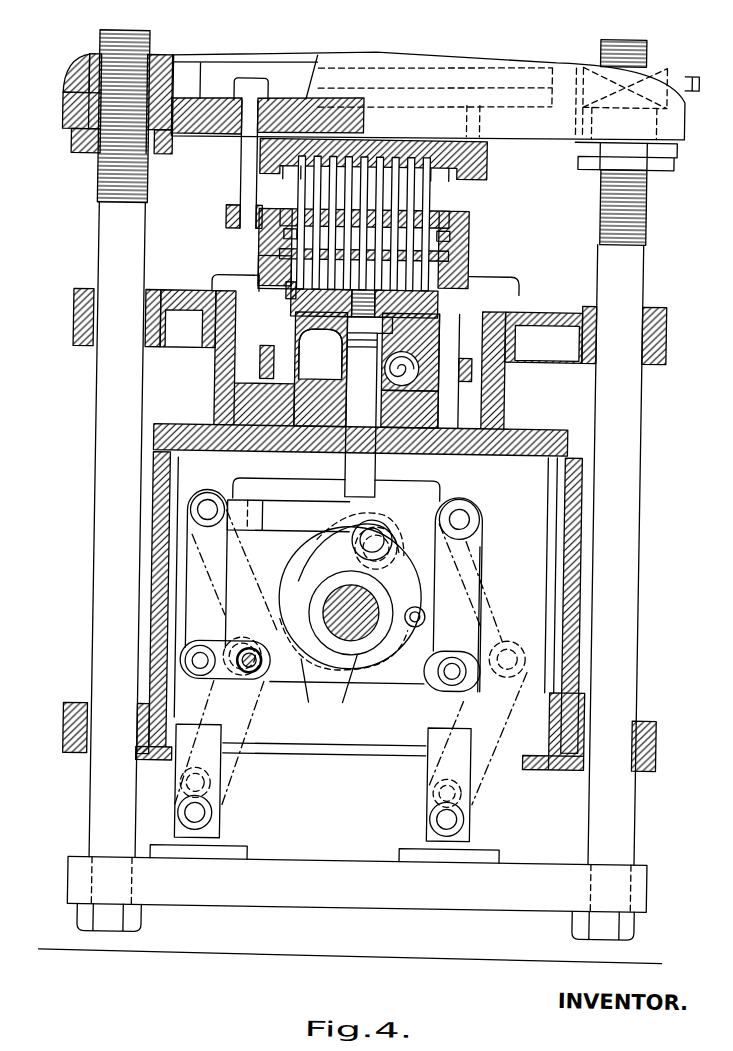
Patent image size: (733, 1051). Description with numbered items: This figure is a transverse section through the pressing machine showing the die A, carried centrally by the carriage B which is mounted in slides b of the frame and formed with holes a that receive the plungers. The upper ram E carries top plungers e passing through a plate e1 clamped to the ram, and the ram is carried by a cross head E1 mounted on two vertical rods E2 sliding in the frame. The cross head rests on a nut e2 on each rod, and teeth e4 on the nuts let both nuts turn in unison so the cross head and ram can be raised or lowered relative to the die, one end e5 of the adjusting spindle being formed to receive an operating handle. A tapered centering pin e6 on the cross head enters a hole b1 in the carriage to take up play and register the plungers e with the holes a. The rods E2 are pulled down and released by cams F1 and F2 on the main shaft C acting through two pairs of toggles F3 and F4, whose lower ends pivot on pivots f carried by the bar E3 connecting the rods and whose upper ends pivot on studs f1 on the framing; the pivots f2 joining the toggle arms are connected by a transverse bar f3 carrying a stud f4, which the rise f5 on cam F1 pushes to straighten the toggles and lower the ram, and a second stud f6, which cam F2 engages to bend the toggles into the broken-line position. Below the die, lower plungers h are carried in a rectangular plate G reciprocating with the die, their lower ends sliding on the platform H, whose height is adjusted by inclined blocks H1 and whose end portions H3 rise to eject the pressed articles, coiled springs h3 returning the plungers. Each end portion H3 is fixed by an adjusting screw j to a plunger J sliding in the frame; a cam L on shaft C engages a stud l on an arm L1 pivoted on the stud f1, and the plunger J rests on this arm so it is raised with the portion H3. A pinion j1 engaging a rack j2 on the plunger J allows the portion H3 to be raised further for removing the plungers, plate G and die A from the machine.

The vertical rods E2 is at (140, 14).
The nut e2 is at (87, 62).
The teeth on nut e4 is at (76, 62).
The end of spindle e5 is at (685, 70).
The cross head E1 is at (428, 96).
The centering pin e6 is at (236, 165).
The ram E is at (478, 170).
The plungers e is at (294, 195).
The plate e1 is at (371, 182).
The die A is at (379, 237).
The holes in die a is at (268, 242).
The hole in carriage b1 is at (224, 222).
The slides b is at (214, 290).
The rectangular plate G is at (262, 266).
The lower plungers h is at (281, 250).
The coiled spring h3 is at (290, 290).
The carriage B is at (257, 308).
The platform H is at (321, 369).
The end portions of platform H3 is at (297, 300).
The inclined blocks H1 is at (313, 392).
The plunger J is at (369, 394).
The adjusting screw j is at (354, 338).
The pinion j1 is at (410, 352).
The rack j2 is at (380, 388).
The studs f1 is at (206, 496).
The arm L1 is at (288, 516).
The cam L is at (318, 553).
The stud l is at (390, 533).
The toggles F3 is at (206, 568).
The toggles F4 is at (453, 613).
The cam F1 is at (303, 698).
The cam F2 is at (316, 616).
The stud f4 is at (249, 648).
The second stud f6 is at (428, 616).
The pivots f2 is at (508, 675).
The rise on cam f5 is at (311, 699).
The transverse bar f3 is at (345, 697).
The main shaft C is at (362, 655).
The pivots f is at (218, 816).
The bar E3 is at (357, 891).